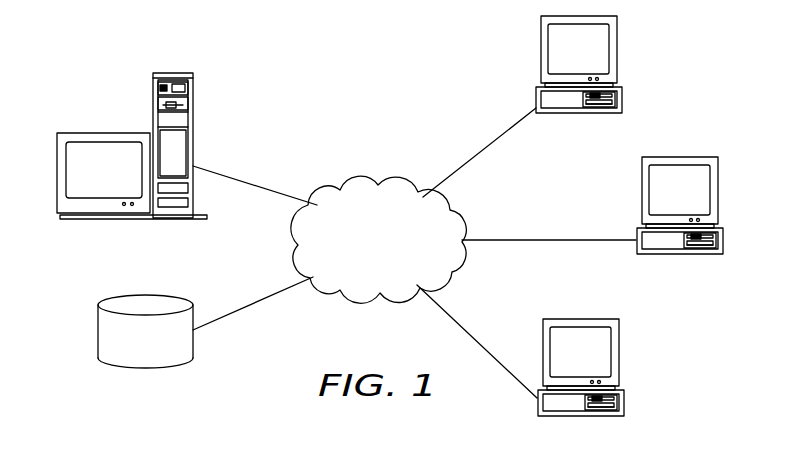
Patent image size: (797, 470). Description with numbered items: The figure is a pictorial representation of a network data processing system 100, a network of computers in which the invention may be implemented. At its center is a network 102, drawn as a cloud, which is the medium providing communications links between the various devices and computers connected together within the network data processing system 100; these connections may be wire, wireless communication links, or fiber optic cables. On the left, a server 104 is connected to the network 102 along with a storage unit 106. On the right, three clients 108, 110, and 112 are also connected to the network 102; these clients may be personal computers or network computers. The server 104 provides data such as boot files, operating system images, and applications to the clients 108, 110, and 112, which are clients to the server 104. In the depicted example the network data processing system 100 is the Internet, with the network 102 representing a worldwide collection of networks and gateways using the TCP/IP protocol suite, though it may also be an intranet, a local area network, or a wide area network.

The network data processing system 100 is at (266, 55).
The network 102 is at (366, 266).
The server 104 is at (153, 93).
The storage unit 106 is at (98, 332).
The client 108 is at (617, 55).
The client 110 is at (718, 192).
The client 112 is at (618, 353).